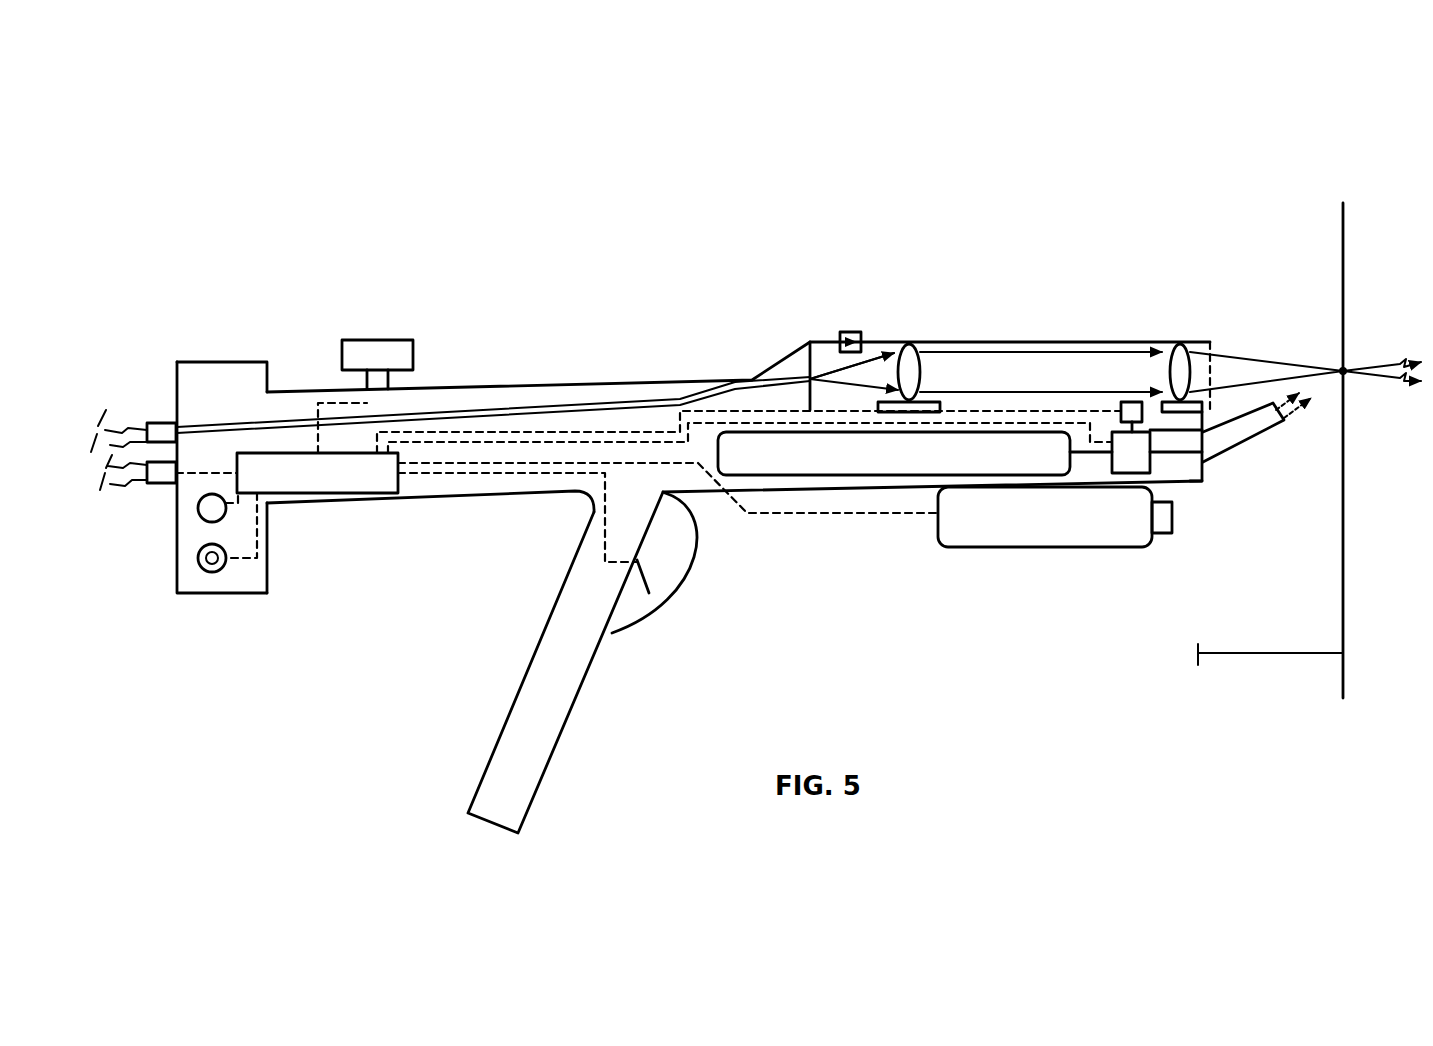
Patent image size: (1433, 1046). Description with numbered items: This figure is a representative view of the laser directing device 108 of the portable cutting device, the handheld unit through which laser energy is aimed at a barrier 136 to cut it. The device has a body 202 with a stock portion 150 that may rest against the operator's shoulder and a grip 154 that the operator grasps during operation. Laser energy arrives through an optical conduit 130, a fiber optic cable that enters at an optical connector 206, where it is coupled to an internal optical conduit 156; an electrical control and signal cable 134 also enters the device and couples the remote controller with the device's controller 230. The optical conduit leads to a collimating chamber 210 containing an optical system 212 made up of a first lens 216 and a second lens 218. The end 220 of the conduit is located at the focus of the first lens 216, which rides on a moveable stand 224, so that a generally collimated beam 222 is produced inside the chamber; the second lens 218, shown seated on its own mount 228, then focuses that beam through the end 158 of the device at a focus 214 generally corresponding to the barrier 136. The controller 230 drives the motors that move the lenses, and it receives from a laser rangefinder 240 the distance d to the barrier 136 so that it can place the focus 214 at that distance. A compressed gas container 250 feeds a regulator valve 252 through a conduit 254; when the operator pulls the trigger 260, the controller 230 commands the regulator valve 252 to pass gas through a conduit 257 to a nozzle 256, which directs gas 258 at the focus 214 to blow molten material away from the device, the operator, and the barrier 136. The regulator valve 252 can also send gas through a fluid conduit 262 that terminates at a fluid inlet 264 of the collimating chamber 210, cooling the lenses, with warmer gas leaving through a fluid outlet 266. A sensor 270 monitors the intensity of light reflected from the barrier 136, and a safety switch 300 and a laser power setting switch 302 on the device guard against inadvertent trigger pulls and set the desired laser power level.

The laser directing device 108 is at (763, 178).
The optical conduit 130 is at (121, 423).
The electrical control and signal cable 134 is at (131, 490).
The barrier 136 is at (1340, 600).
The stock portion 150 is at (258, 607).
The grip 154 is at (500, 690).
The optical conduit 156 is at (467, 407).
The end 158 is at (1226, 342).
The body 202 is at (585, 385).
The optical connector 206 is at (156, 419).
The collimating chamber 210 is at (991, 339).
The optical system 212 is at (1040, 378).
The focus 214 is at (1340, 370).
The first lens 216 is at (909, 359).
The second lens 218 is at (1196, 342).
The end 220 is at (814, 371).
The collimated beam 222 is at (1012, 360).
The moveable stand 224 is at (926, 398).
The lens mount 228 is at (1179, 358).
The controller 230 is at (352, 494).
The laser rangefinder 240 is at (973, 530).
The compressed gas container 250 is at (915, 453).
The regulator valve 252 is at (1153, 535).
The conduit 254 is at (1082, 452).
The nozzle 256 is at (1262, 416).
The conduit 257 is at (1186, 484).
The gas 258 is at (1306, 419).
The trigger 260 is at (658, 581).
The fluid conduit 262 is at (1142, 427).
The fluid inlet 264 is at (1131, 400).
The fluid outlet 266 is at (856, 333).
The sensor 270 is at (386, 336).
The safety switch 300 is at (213, 513).
The laser power setting switch 302 is at (212, 576).
The distance d is at (1257, 657).